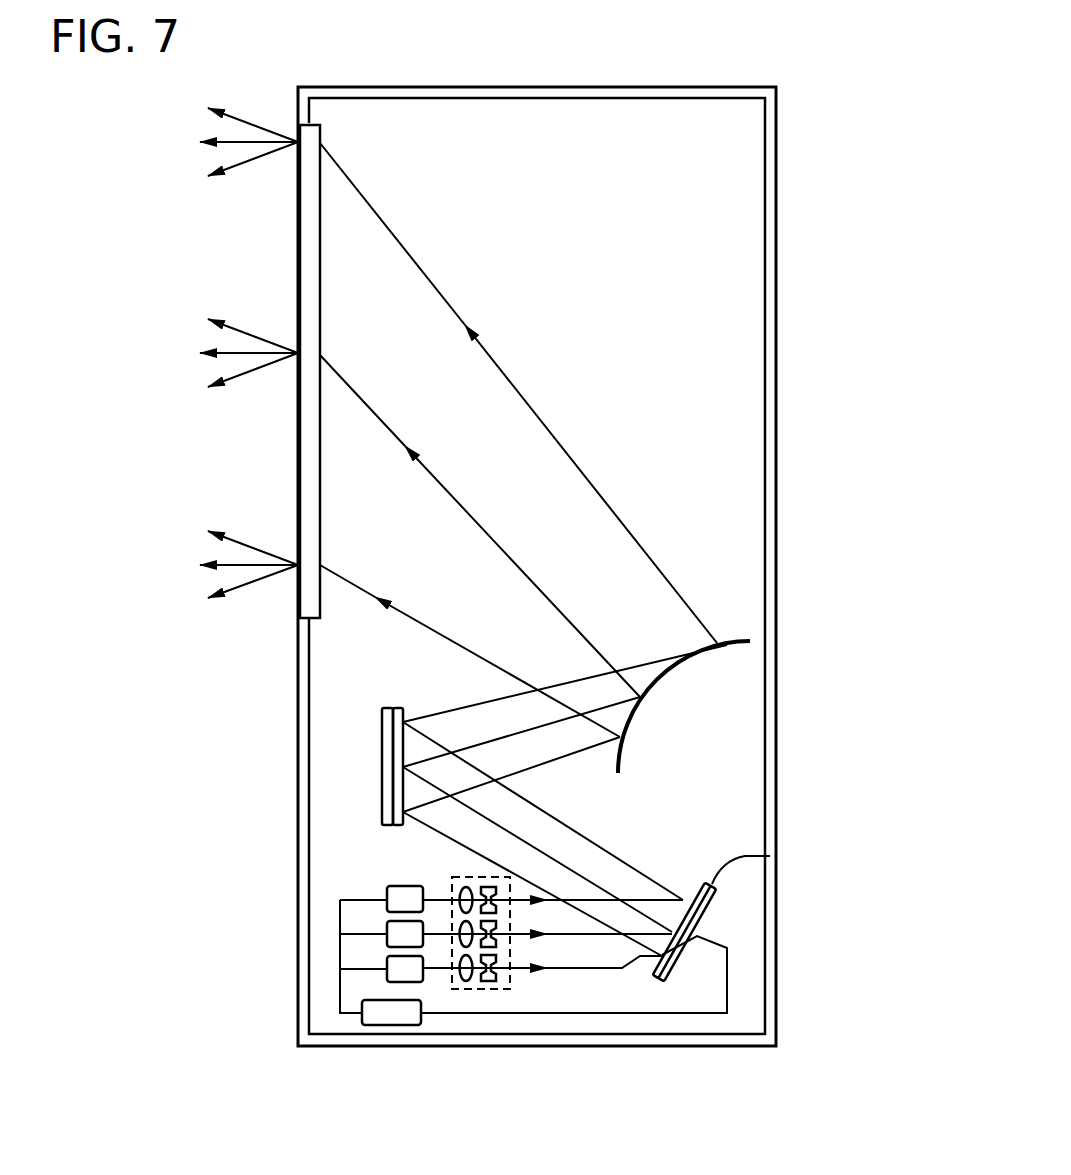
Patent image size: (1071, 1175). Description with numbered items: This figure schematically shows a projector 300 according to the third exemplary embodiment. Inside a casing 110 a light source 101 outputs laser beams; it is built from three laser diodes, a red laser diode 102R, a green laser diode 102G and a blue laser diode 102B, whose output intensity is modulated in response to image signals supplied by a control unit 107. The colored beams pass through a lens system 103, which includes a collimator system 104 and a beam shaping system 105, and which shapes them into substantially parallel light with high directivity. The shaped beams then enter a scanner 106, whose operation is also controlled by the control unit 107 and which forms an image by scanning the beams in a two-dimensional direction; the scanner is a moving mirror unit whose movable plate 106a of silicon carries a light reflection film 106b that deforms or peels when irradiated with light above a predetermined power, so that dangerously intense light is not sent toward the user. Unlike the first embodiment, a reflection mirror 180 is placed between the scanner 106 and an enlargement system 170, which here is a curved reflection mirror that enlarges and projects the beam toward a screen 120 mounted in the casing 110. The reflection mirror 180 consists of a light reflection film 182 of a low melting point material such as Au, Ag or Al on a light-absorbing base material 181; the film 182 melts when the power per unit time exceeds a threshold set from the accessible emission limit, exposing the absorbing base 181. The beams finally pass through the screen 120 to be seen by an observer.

The projector 300 is at (820, 106).
The casing 110 is at (776, 1005).
The screen 120 is at (298, 248).
The enlargement system 170 is at (736, 642).
The reflection mirror 180 is at (321, 737).
The light-absorbing base material 181 is at (383, 720).
The light reflection film 182 is at (398, 708).
The light source 101 is at (260, 917).
The red laser diode 102R is at (387, 888).
The green laser diode 102G is at (387, 926).
The blue laser diode 102B is at (387, 963).
The lens system 103 is at (416, 974).
The collimator system 104 is at (461, 884).
The beam shaping system 105 is at (495, 878).
The scanner 106 is at (640, 963).
The movable plate 106a is at (665, 983).
The light reflection film 106b is at (770, 856).
The control unit 107 is at (390, 1015).